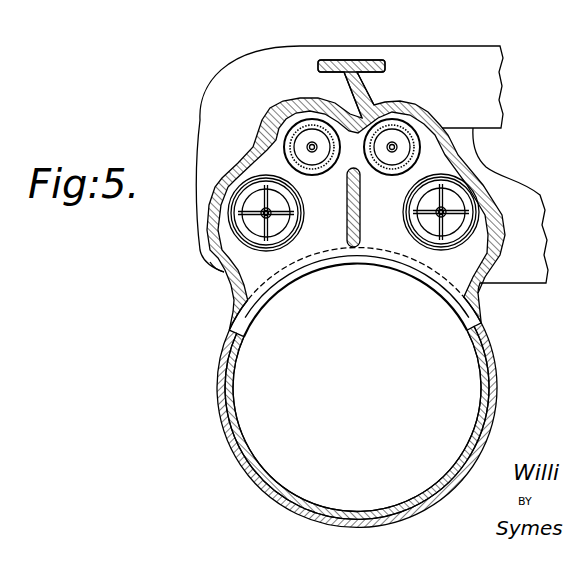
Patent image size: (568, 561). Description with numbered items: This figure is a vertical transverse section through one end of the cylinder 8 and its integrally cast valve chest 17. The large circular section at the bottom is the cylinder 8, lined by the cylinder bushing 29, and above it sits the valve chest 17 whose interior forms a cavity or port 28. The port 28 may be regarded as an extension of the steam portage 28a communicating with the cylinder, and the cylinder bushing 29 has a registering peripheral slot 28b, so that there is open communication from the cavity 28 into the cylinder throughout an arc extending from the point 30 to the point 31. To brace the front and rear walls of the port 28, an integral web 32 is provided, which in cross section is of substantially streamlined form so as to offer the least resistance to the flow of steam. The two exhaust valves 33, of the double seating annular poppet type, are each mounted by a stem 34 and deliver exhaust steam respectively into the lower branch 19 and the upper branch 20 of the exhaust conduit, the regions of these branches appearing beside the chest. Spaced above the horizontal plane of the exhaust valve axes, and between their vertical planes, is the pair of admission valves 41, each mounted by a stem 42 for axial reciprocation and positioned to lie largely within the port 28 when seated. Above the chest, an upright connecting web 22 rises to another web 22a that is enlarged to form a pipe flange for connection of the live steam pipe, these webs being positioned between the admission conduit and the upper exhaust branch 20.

The cylinder 8 is at (497, 397).
The valve chest 17 is at (210, 253).
The lower branch of steam exhaust conduit means 19 is at (510, 210).
The upper branch of steam exhaust conduit means 20 is at (349, 159).
The upright connecting web 22 is at (368, 93).
The web enlarged to form a pipe flange 22a is at (328, 60).
The cavity or port 28 is at (356, 195).
The steam portage 28a is at (294, 262).
The registering peripheral slot 28b is at (344, 257).
The cylinder bushing 29 is at (233, 416).
The point 30 is at (251, 311).
The point 31 is at (460, 313).
The integral web 32 is at (360, 211).
The exhaust valve 33 is at (452, 242).
The stem 34 is at (441, 212).
The admission valve 41 is at (382, 160).
The stem 42 is at (392, 147).